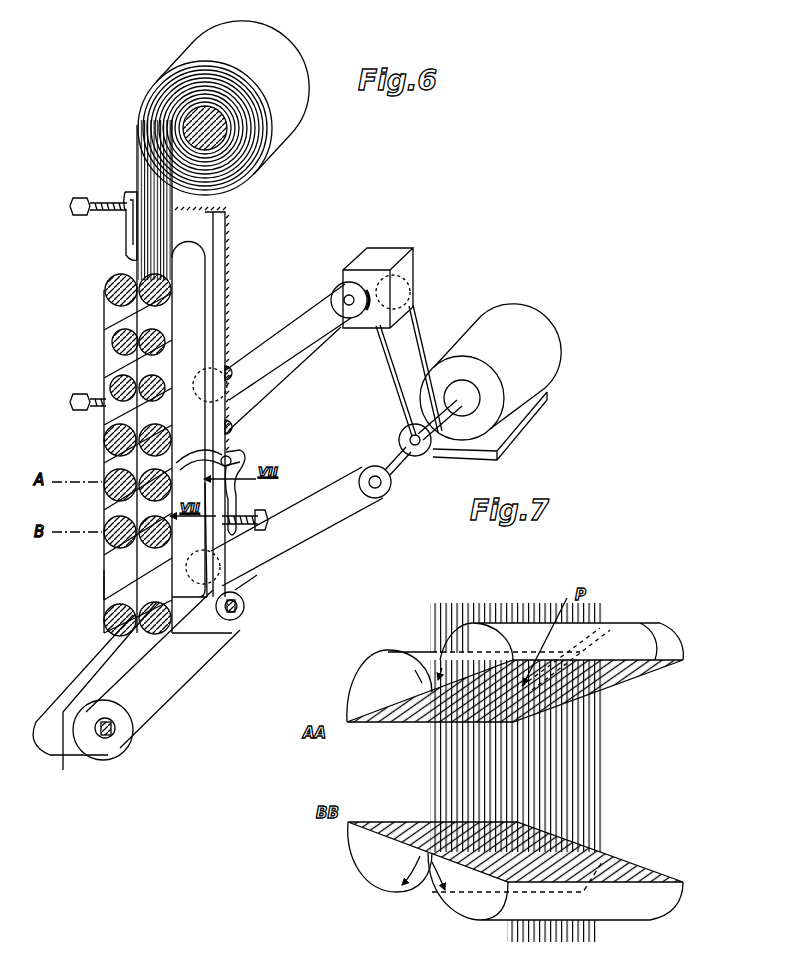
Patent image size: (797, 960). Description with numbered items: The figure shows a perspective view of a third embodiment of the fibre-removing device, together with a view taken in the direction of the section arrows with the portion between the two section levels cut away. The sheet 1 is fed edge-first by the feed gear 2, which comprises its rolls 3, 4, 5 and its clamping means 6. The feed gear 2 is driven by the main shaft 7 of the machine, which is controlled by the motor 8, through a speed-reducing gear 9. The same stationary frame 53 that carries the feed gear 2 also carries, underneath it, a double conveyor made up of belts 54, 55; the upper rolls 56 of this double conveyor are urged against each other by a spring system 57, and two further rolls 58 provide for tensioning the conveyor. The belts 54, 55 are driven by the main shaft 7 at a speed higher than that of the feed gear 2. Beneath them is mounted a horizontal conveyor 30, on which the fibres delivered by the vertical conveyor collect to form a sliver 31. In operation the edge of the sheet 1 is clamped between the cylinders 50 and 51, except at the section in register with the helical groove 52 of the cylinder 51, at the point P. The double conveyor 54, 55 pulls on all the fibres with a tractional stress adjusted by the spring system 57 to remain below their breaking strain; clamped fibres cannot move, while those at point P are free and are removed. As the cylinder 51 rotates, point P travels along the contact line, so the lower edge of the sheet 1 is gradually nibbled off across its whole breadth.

In FIG. 6, the sheet 1 is at (295, 125).
In FIG. 6, the feed gear 2 is at (101, 312).
In FIG. 6, the roll 3 is at (106, 286).
In FIG. 6, the roll 4 is at (113, 385).
In FIG. 6, the roll 5 is at (106, 446).
In FIG. 6, the clamping means 6 is at (97, 195).
In FIG. 6, the main shaft 7 is at (408, 468).
In FIG. 6, the motor 8 is at (538, 370).
In FIG. 6, the speed-reducing gear 9 is at (410, 276).
In FIG. 6, the horizontal conveyor 30 is at (162, 690).
In FIG. 6, the sliver 31 is at (88, 688).
In FIG. 6, the cylinder 50 is at (106, 490).
In FIG. 7, the cylinder 50 is at (385, 666).
In FIG. 6, the cylinder 51 is at (240, 456).
In FIG. 7, the cylinder 51 is at (685, 658).
In FIG. 6, the helical groove 52 is at (232, 441).
In FIG. 7, the helical groove 52 is at (648, 632).
In FIG. 6, the stationary frame 53 is at (232, 246).
In FIG. 6, the conveyor belt 54 is at (108, 583).
In FIG. 6, the conveyor belt 55 is at (262, 550).
In FIG. 7, the conveyor belt 55 is at (610, 867).
In FIG. 6, the upper rolls 56 is at (118, 552).
In FIG. 7, the upper rolls 56 is at (357, 846).
In FIG. 6, the spring system 57 is at (240, 522).
In FIG. 6, the tensioning rolls 58 is at (118, 633).